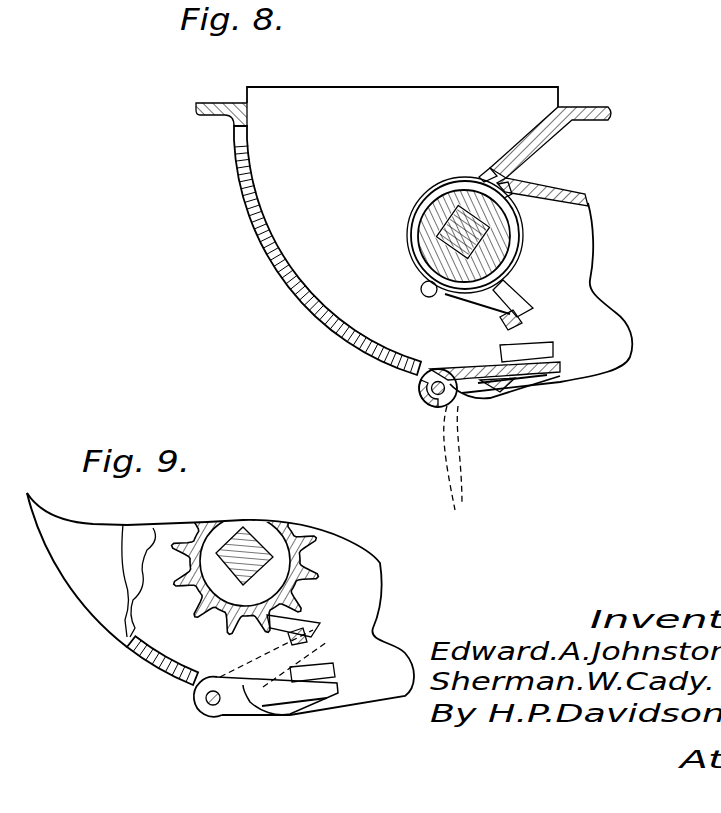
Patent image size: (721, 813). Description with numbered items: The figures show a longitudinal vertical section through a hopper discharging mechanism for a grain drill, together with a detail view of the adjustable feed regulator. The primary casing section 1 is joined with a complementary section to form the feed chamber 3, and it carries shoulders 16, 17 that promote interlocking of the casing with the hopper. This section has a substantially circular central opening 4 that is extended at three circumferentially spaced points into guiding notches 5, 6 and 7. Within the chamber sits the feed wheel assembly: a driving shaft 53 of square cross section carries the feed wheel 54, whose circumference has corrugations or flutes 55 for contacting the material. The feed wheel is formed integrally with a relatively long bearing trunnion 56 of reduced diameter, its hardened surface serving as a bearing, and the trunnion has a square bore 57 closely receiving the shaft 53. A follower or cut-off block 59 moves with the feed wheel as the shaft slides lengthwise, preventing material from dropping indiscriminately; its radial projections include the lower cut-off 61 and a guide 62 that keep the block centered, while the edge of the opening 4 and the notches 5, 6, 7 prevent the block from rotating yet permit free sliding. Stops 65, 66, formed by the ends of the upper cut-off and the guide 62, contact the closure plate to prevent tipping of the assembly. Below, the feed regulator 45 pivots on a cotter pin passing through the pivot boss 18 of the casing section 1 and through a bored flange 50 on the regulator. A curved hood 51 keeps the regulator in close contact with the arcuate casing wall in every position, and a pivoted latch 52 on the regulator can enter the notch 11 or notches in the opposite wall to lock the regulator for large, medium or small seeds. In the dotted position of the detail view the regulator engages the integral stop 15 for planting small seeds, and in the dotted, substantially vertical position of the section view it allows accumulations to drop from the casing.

In FIG. 8, the primary casing section 1 is at (242, 190).
In FIG. 8, the feed chamber 3 is at (325, 95).
In FIG. 9, the feed chamber 3 is at (147, 630).
In FIG. 8, the central opening 4 is at (424, 193).
In FIG. 8, the guiding notch 5 is at (493, 307).
In FIG. 8, the guiding notch 6 is at (482, 174).
In FIG. 8, the guiding notch 7 is at (437, 297).
In FIG. 8, the notch 11 is at (543, 352).
In FIG. 9, the notch 11 is at (333, 670).
In FIG. 8, the stop 15 is at (522, 330).
In FIG. 9, the stop 15 is at (290, 636).
In FIG. 8, the shoulder 16 is at (560, 96).
In FIG. 8, the shoulder 17 is at (246, 97).
In FIG. 8, the pivot boss 18 is at (457, 404).
In FIG. 8, the feed regulator 45 is at (565, 378).
In FIG. 9, the feed regulator 45 is at (323, 699).
In FIG. 8, the flange 50 is at (431, 405).
In FIG. 8, the hood 51 is at (418, 391).
In FIG. 9, the hood 51 is at (193, 697).
In FIG. 8, the pivoted latch 52 is at (512, 387).
In FIG. 9, the driving shaft 53 is at (227, 562).
In FIG. 9, the feed wheel 54 is at (300, 557).
In FIG. 8, the flutes 55 is at (450, 240).
In FIG. 8, the bearing trunnion 56 is at (497, 230).
In FIG. 8, the square bore 57 is at (470, 208).
In FIG. 8, the cut-off block 59 is at (412, 231).
In FIG. 8, the lower cut-off 61 is at (505, 298).
In FIG. 9, the lower cut-off 61 is at (297, 620).
In FIG. 8, the guide 62 is at (422, 296).
In FIG. 8, the stop 65 is at (518, 177).
In FIG. 8, the stop 66 is at (421, 279).